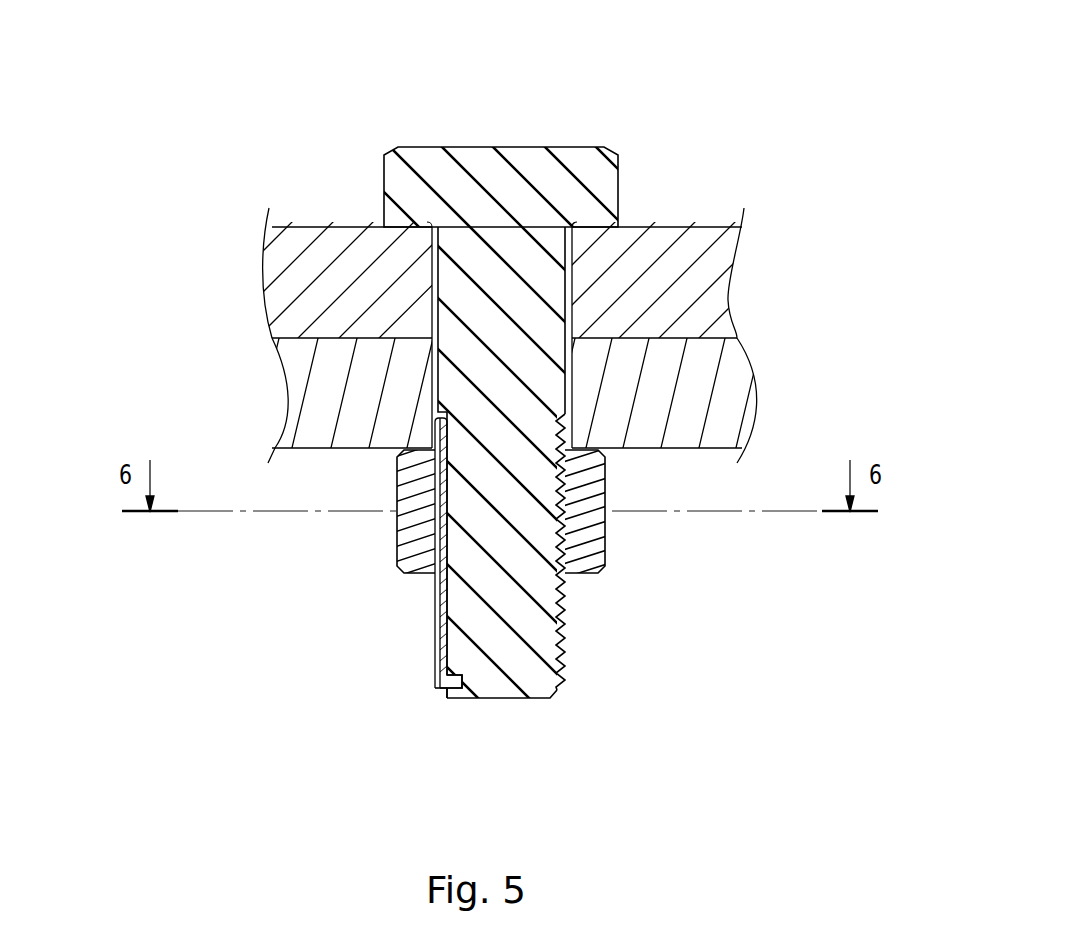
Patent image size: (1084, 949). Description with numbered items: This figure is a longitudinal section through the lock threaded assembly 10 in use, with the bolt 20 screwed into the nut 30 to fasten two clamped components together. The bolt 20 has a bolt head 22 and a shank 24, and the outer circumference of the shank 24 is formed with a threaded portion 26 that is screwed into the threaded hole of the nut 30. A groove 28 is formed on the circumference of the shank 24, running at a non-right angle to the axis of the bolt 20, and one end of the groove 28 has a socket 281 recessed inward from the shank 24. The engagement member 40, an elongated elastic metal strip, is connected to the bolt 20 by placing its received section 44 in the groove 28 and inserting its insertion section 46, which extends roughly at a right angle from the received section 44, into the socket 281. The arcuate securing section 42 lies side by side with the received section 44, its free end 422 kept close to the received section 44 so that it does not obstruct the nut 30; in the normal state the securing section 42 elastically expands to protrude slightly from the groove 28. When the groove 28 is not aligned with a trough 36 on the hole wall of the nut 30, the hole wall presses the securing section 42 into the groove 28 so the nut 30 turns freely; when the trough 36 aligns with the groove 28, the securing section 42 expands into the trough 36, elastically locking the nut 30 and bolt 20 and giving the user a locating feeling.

The lock threaded assembly 10 is at (678, 103).
The bolt 20 is at (588, 138).
The bolt head 22 is at (410, 185).
The shank 24 is at (548, 286).
The threaded portion 26 is at (565, 636).
The groove 28 is at (437, 413).
The socket 281 is at (462, 687).
The nut 30 is at (367, 538).
The trough 36 is at (434, 481).
The engagement member 40 is at (427, 597).
The securing section 42 is at (440, 632).
The received section 44 is at (443, 663).
The free end 422 is at (433, 683).
The insertion section 46 is at (452, 689).